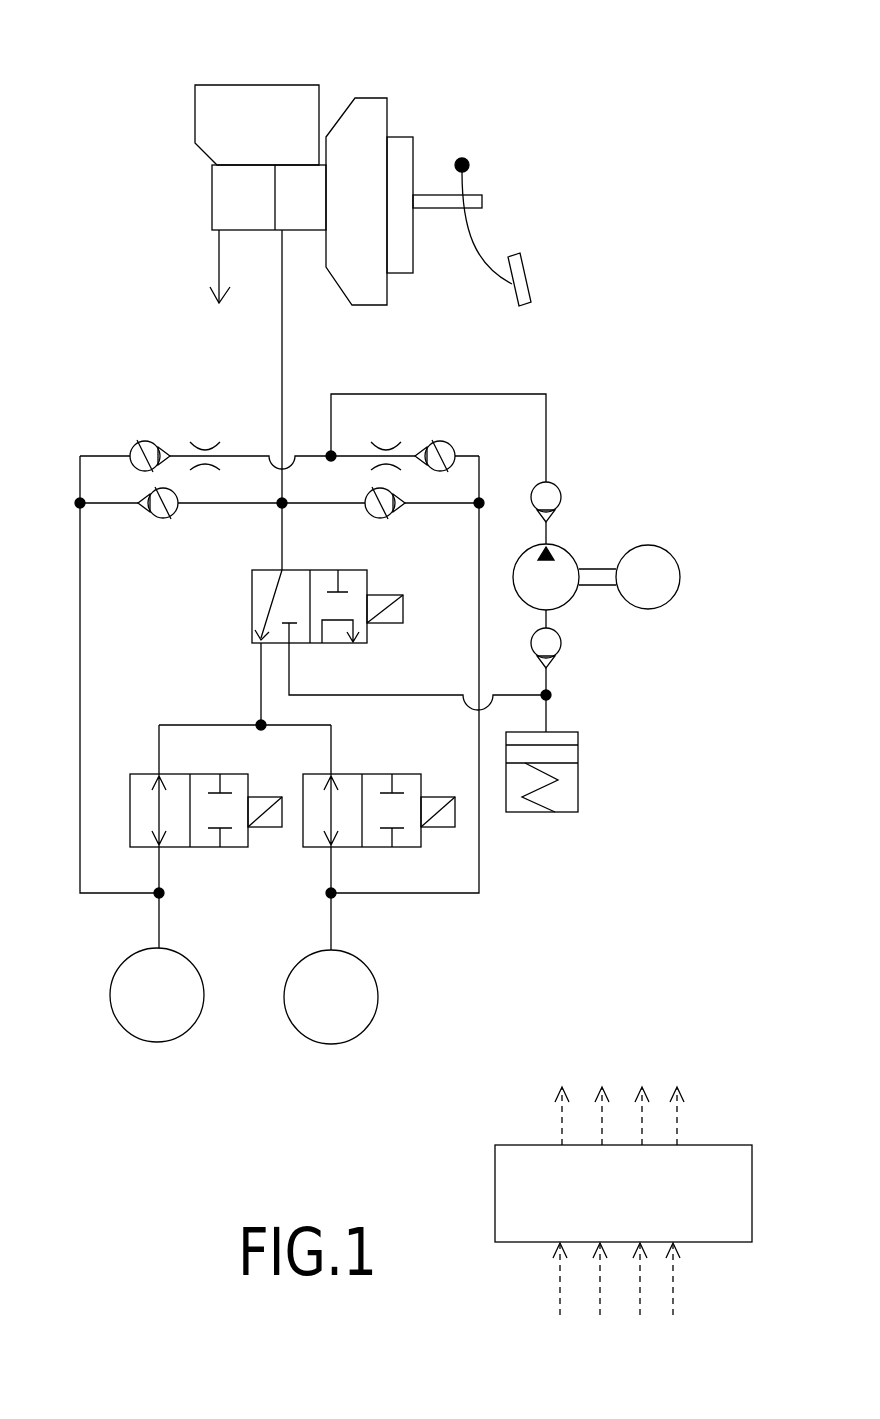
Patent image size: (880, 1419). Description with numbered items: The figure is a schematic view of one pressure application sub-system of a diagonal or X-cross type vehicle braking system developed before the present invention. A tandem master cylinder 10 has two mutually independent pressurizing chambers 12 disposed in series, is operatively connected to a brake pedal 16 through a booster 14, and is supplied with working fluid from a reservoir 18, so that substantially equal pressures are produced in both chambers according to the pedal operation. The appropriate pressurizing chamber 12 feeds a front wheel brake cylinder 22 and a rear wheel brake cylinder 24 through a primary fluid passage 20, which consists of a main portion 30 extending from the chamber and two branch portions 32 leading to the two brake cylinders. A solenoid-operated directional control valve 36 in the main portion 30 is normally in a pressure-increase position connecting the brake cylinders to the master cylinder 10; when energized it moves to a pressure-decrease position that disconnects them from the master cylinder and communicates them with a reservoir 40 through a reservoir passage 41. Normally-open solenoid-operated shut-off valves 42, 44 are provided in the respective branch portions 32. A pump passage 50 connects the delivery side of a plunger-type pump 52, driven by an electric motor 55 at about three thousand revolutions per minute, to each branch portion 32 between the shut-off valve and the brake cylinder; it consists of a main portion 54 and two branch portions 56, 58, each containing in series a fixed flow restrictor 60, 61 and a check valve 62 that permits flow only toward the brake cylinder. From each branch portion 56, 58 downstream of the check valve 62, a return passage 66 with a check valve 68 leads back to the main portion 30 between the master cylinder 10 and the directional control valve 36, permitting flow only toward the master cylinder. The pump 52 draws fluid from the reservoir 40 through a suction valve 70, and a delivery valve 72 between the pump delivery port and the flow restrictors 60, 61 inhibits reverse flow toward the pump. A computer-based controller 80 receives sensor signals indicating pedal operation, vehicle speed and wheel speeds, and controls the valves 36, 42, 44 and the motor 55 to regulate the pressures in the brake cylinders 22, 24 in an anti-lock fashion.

The master cylinder 10 is at (170, 198).
The pressurizing chambers 12 is at (248, 220).
The booster 14 is at (367, 117).
The brake pedal 16 is at (530, 293).
The reservoir 18 is at (277, 100).
The primary fluid passage 20 is at (318, 363).
The front wheel brake cylinder 22 is at (165, 1032).
The rear wheel brake cylinder 24 is at (348, 1032).
The main portion 30 is at (252, 537).
The branch portions 32 is at (183, 916).
The solenoid-operated directional control valve 36 is at (255, 583).
The reservoir 40 is at (565, 813).
The reservoir passage 41 is at (395, 692).
The solenoid-operated shut-off valve 42 is at (203, 847).
The solenoid-operated shut-off valve 44 is at (372, 777).
The pump passage 50 is at (486, 377).
The pump 52 is at (562, 580).
The main portion 54 is at (547, 435).
The electric motor 55 is at (670, 557).
The branch portion 56 is at (110, 895).
The branch portion 58 is at (480, 880).
The fixed flow restrictor 60 is at (208, 437).
The fixed flow restrictor 61 is at (394, 438).
The check valve 62 is at (132, 452).
The return passage 66 is at (113, 536).
The check valve 68 is at (160, 517).
The suction valve 70 is at (553, 641).
The delivery valve 72 is at (550, 487).
The controller 80 is at (688, 1150).